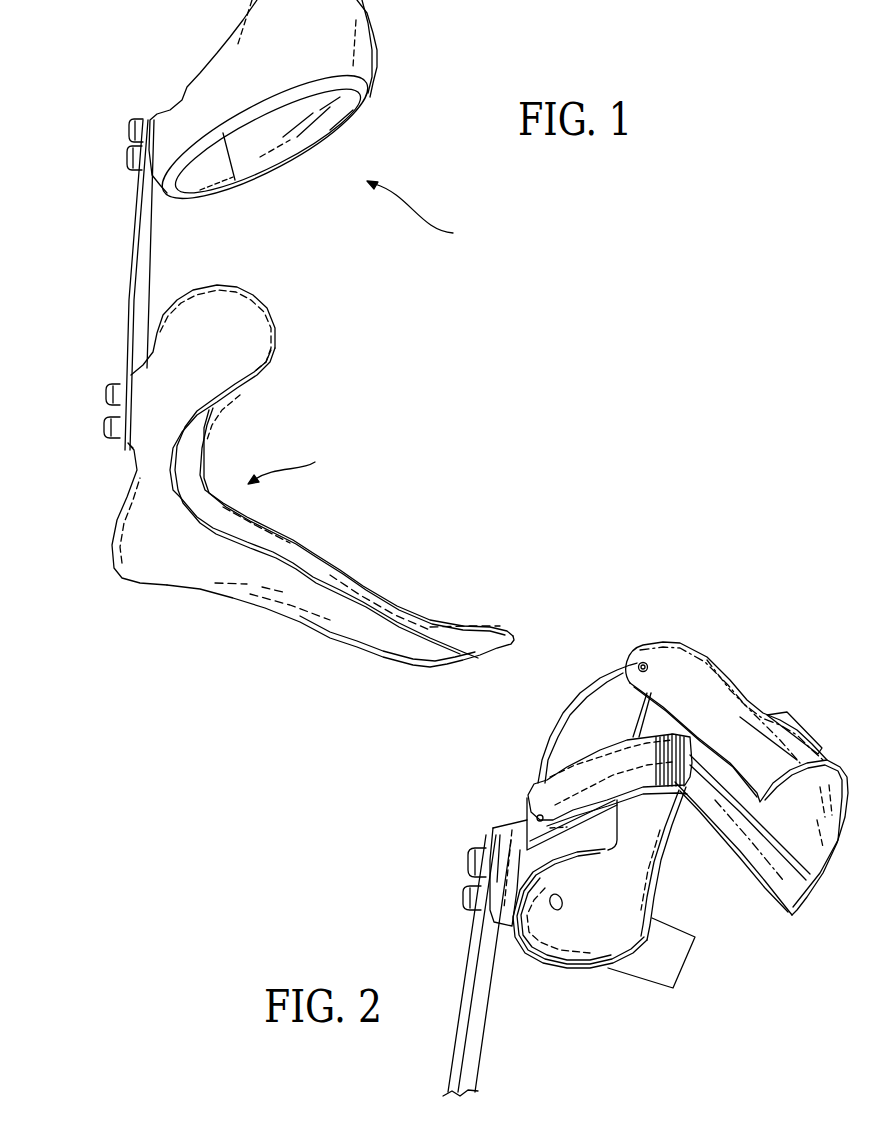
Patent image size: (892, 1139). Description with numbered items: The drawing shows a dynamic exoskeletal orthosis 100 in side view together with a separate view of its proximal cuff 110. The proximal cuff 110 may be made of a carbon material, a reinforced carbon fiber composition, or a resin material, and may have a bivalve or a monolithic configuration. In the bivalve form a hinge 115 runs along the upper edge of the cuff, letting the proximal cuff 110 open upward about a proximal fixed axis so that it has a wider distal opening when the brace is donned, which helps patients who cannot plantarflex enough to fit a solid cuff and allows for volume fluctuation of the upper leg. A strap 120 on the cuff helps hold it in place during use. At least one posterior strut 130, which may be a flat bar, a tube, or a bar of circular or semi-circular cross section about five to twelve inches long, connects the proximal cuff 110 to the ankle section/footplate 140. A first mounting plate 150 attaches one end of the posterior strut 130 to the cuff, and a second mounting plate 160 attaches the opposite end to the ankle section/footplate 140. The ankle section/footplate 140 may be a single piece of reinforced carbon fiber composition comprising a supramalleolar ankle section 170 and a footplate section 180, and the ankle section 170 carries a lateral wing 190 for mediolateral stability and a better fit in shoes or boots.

In FIG. 1, the exoskeletal orthosis 100 is at (427, 214).
In FIG. 1, the proximal cuff 110 is at (376, 56).
In FIG. 2, the hinge 115 is at (641, 662).
In FIG. 2, the strap 120 is at (537, 783).
In FIG. 1, the posterior strut 130 is at (130, 258).
In FIG. 2, the posterior strut 130 is at (473, 1038).
In FIG. 1, the ankle section/footplate 140 is at (341, 503).
In FIG. 1, the first mounting plate 150 is at (130, 145).
In FIG. 2, the first mounting plate 150 is at (470, 877).
In FIG. 1, the second mounting plate 160 is at (108, 413).
In FIG. 1, the supramalleolar ankle section 170 is at (118, 508).
In FIG. 1, the footplate section 180 is at (267, 615).
In FIG. 1, the lateral wing 190 is at (278, 330).